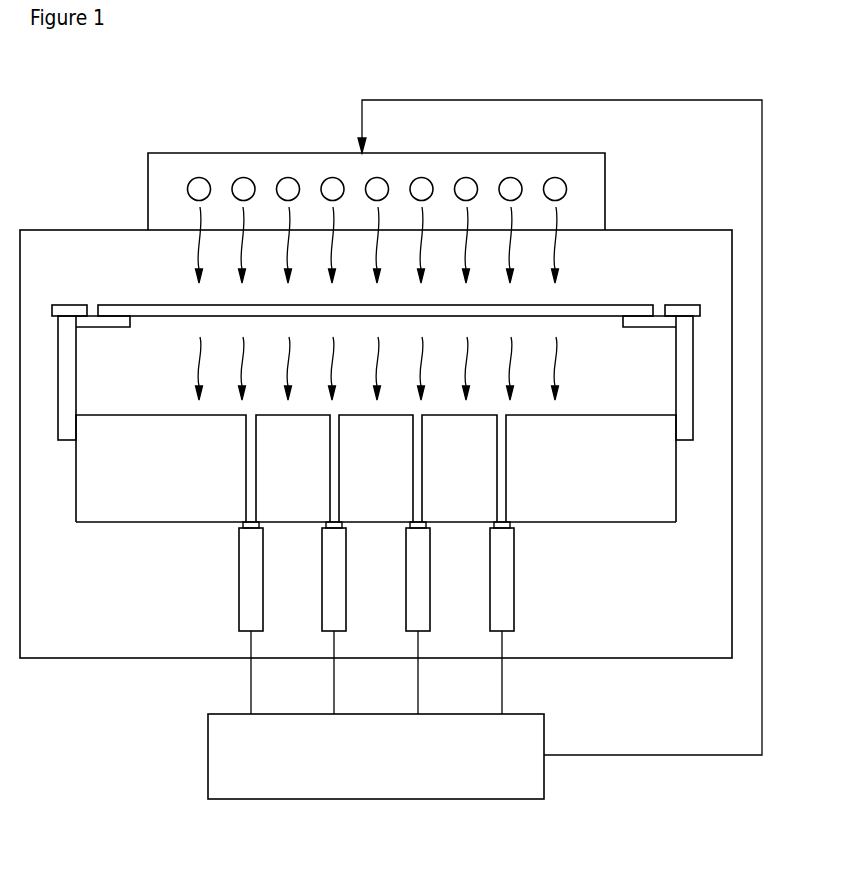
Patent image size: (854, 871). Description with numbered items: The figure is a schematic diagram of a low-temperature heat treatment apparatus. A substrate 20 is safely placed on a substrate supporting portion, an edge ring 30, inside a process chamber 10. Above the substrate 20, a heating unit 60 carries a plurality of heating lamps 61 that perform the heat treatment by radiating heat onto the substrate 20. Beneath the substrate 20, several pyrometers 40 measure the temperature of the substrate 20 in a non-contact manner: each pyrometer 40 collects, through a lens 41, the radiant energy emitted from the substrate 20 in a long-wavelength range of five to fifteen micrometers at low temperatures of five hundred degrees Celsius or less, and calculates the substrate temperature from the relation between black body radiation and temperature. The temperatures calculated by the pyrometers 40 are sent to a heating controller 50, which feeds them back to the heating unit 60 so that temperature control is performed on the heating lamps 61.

The process chamber 10 is at (686, 229).
The substrate 20 is at (616, 304).
The edge ring 30 is at (686, 304).
The pyrometer 40 is at (238, 578).
The lens 41 is at (240, 526).
The heating controller 50 is at (531, 714).
The heating unit 60 is at (607, 175).
The heating lamp 61 is at (556, 177).